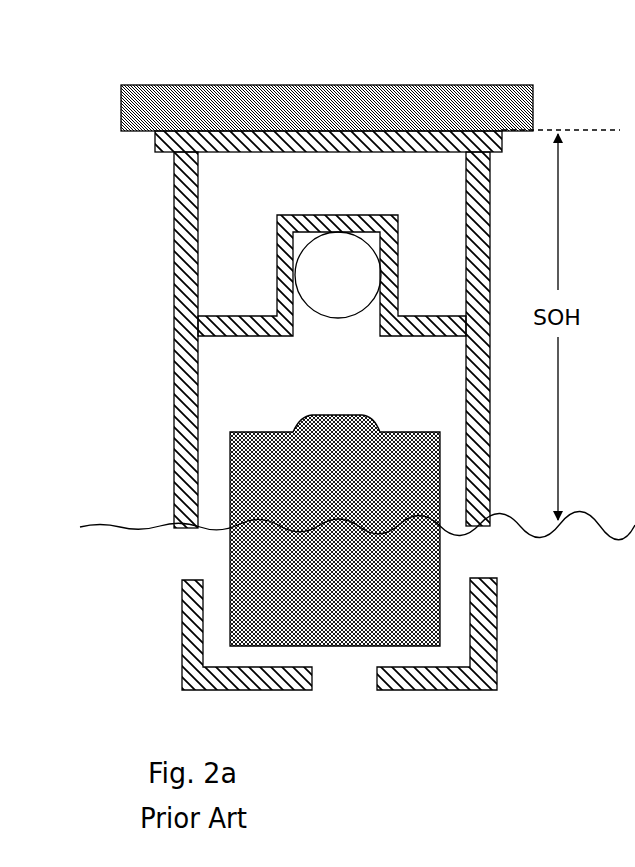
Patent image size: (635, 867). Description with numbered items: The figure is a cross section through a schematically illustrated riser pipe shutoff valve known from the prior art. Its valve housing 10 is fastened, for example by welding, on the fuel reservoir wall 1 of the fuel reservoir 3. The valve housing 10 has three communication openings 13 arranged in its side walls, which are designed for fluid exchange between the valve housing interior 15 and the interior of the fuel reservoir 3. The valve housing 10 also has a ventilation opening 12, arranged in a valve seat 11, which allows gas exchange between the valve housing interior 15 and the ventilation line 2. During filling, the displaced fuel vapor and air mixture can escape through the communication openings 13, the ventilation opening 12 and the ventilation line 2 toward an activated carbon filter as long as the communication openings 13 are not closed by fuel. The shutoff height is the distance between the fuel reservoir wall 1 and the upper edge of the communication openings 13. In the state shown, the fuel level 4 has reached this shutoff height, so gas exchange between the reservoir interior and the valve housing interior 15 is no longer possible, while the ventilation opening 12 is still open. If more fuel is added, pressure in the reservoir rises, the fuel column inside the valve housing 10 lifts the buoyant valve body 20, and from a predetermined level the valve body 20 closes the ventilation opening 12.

The fuel reservoir wall 1 is at (123, 133).
The ventilation line 2 is at (360, 273).
The fuel reservoir 3 is at (170, 82).
The fuel level 4 is at (122, 525).
The valve housing 10 is at (175, 223).
The valve seat 11 is at (252, 317).
The ventilation opening 12 is at (330, 327).
The communication opening 13 is at (188, 550).
The valve housing interior 15 is at (457, 615).
The valve body 20 is at (303, 490).